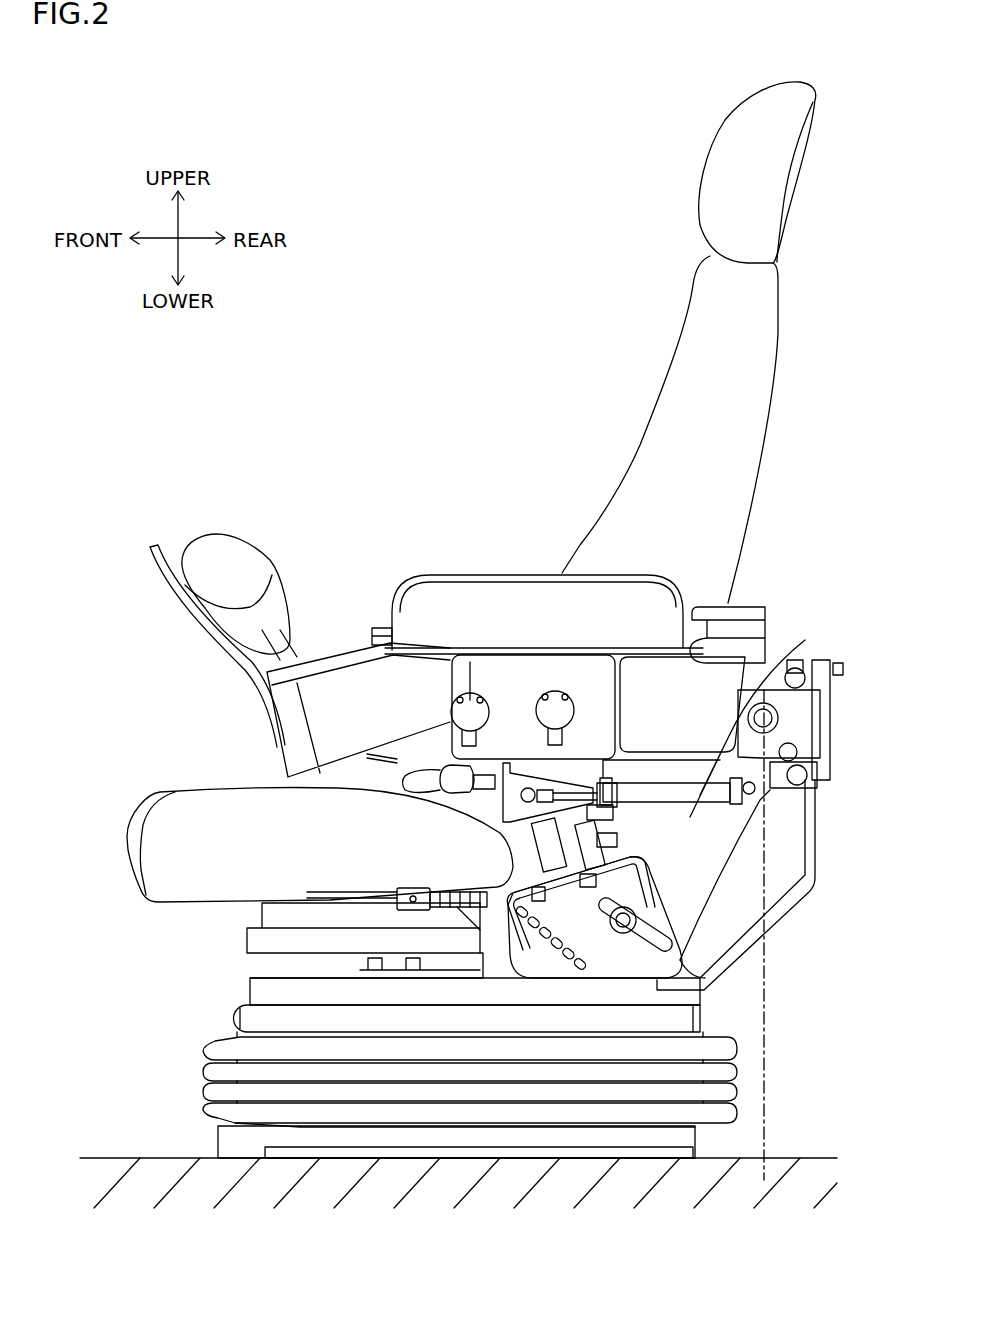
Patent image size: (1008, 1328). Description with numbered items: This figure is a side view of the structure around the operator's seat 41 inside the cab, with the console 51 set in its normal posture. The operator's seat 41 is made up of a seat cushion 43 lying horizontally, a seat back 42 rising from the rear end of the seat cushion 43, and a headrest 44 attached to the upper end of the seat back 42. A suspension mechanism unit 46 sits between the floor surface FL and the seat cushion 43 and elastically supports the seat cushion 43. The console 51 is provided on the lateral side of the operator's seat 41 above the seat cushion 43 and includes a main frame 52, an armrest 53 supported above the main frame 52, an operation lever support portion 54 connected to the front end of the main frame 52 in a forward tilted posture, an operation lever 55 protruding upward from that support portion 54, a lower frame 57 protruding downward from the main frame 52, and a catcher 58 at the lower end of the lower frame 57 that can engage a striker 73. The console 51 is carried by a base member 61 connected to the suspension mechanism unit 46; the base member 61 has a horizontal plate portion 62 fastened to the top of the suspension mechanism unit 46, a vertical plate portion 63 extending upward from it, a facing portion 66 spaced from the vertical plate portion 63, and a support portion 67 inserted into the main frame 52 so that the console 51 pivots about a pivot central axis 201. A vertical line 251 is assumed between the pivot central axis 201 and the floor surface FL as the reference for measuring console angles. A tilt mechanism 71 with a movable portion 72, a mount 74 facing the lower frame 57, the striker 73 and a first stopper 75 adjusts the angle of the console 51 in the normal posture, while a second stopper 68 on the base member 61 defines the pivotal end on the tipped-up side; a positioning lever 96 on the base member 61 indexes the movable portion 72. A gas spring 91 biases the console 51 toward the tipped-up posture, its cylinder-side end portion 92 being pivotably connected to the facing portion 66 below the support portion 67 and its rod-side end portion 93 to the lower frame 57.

The operator's seat 41 is at (741, 98).
The headrest 44 is at (758, 167).
The seat back 42 is at (738, 345).
The operation lever 55 is at (241, 557).
The operation lever support portion 54 is at (322, 720).
The armrest 53 is at (442, 600).
The rod-side end portion 93 is at (523, 790).
The first stopper 75 is at (587, 810).
The lower frame 57 is at (577, 772).
The console 51 is at (783, 620).
The main frame 52 is at (740, 665).
The second stopper 68 is at (800, 663).
The facing portion 66 is at (787, 700).
The pivot central axis 201 is at (737, 718).
The support portion 67 is at (772, 711).
The cylinder-side end portion 92 is at (790, 786).
The gas spring 91 is at (715, 797).
The vertical plate portion 63 is at (778, 840).
The catcher 58 is at (620, 872).
The mount 74 is at (660, 890).
The base member 61 is at (787, 917).
The movable portion 72 is at (683, 913).
The vertical line 251 is at (770, 1033).
The suspension mechanism unit 46 is at (742, 1072).
The floor surface FL is at (804, 1158).
The positioning lever 96 is at (404, 905).
The horizontal plate portion 62 is at (442, 978).
The tilt mechanism 71 is at (611, 994).
The striker 73 is at (513, 870).
The seat cushion 43 is at (173, 865).